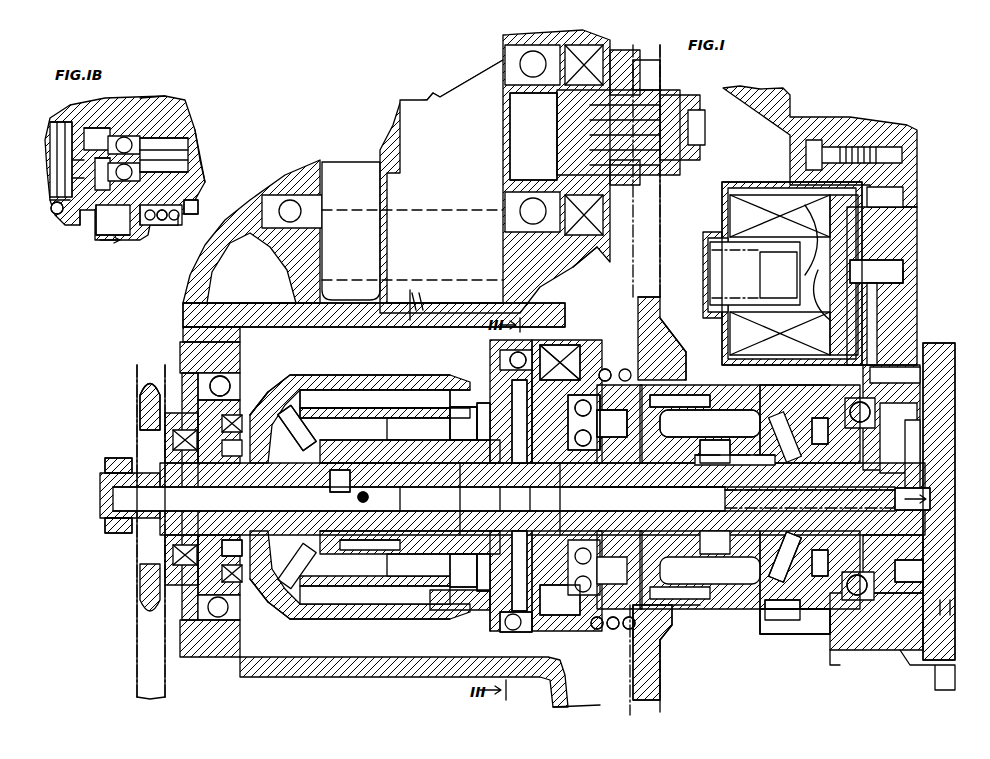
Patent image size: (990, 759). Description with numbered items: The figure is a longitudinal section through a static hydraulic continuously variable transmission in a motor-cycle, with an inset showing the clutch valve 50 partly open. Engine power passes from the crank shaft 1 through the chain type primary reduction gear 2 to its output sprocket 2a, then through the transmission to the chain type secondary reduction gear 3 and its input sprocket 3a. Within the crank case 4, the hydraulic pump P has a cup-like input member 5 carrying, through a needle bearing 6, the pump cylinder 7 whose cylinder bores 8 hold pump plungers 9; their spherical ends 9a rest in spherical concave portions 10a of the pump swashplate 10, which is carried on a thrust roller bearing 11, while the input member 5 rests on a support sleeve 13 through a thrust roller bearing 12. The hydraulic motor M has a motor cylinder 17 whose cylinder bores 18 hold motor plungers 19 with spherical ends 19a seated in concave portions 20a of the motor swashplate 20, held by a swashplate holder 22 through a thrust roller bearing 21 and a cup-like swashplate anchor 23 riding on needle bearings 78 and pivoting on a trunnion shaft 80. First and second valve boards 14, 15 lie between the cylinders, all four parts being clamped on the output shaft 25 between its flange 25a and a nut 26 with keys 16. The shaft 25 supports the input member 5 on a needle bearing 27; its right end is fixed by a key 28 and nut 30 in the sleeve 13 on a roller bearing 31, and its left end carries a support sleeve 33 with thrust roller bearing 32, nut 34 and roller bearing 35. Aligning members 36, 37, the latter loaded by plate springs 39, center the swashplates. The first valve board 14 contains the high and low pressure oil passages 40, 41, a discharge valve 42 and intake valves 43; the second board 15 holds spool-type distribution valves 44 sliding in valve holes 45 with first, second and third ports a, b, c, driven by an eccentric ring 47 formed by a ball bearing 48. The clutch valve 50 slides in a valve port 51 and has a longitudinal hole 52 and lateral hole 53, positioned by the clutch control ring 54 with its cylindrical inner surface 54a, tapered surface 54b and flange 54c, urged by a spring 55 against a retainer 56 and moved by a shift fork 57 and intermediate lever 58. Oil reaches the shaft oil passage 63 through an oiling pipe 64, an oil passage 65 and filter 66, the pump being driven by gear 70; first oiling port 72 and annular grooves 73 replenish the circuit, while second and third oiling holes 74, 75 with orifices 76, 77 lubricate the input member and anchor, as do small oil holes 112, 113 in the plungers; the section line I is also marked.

In FIG. 1, the crank shaft 1 is at (526, 139).
In FIG. 1, the chain type primary reduction gear 2 is at (665, 222).
In FIG. 1, the output sprocket 2a is at (645, 302).
In FIG. 1, the chain type secondary reduction gear 3 is at (137, 632).
In FIG. 1, the input sprocket 3a is at (142, 412).
In FIG. 1, the crank case 4 is at (237, 315).
In FIG. 1, the input member 5 is at (792, 604).
In FIG. 1, the needle bearing 6 is at (680, 378).
In FIG. 1B, the pump cylinder 7 is at (192, 185).
In FIG. 1, the pump cylinder 7 is at (634, 423).
In FIG. 1B, the cylinder bores 8 is at (183, 140).
In FIG. 1, the cylinder bores 8 is at (612, 419).
In FIG. 1B, the pump plungers 9 is at (185, 162).
In FIG. 1, the pump plungers 9 is at (755, 395).
In FIG. 1, the spherical ends 9a is at (780, 398).
In FIG. 1, the pump swashplate 10 is at (760, 550).
In FIG. 1, the spherical concave portions 10a is at (710, 423).
In FIG. 1, the thrust roller bearing 11 is at (818, 420).
In FIG. 1, the thrust roller bearing 12 is at (815, 560).
In FIG. 1, the support sleeve 13 is at (828, 578).
In FIG. 1, the first valve board 14 is at (604, 370).
In FIG. 1, the second valve board 15 is at (500, 395).
In FIG. 1, the keys 16 is at (410, 520).
In FIG. 1, the motor cylinder 17 is at (472, 385).
In FIG. 1, the cylinder bores 18 is at (463, 423).
In FIG. 1, the motor plungers 19 is at (380, 410).
In FIG. 1, the spherical ends 19a is at (345, 440).
In FIG. 1, the motor swashplate 20 is at (280, 395).
In FIG. 1, the spherical concave portions 20a is at (310, 420).
In FIG. 1, the thrust roller bearing 21 is at (320, 598).
In FIG. 1, the swashplate holder 22 is at (315, 560).
In FIG. 1, the swashplate anchor 23 is at (285, 585).
In FIG. 1B, the output shaft 25 is at (146, 115).
In FIG. 1, the output shaft 25 is at (115, 487).
In FIG. 1, the flange 25a is at (370, 524).
In FIG. 1, the nut 26 is at (703, 451).
In FIG. 1, the needle bearing 27 is at (868, 450).
In FIG. 1, the key 28 is at (909, 571).
In FIG. 1, the nut 30 is at (930, 525).
In FIG. 1, the roller bearing 31 is at (857, 595).
In FIG. 1, the thrust roller bearing 32 is at (244, 550).
In FIG. 1, the support sleeve 33 is at (419, 493).
In FIG. 1, the nut 34 is at (115, 530).
In FIG. 1, the roller bearing 35 is at (232, 385).
In FIG. 1, the aligning member 36 is at (764, 466).
In FIG. 1, the aligning member 37 is at (419, 498).
In FIG. 1, the plate springs 39 is at (335, 481).
In FIG. 1B, the high pressure oil passage 40 is at (104, 155).
In FIG. 1, the high pressure oil passage 40 is at (560, 640).
In FIG. 1B, the low pressure oil passage 41 is at (92, 125).
In FIG. 1, the low pressure oil passage 41 is at (553, 545).
In FIG. 1, the discharge valve 42 is at (612, 423).
In FIG. 1, the intake valves 43 is at (595, 441).
In FIG. 1B, the distribution valves 44 is at (62, 130).
In FIG. 1, the distribution valves 44 is at (510, 365).
In FIG. 1, the valve holes 45 is at (500, 466).
In FIG. 1B, the eccentric ring 47 is at (52, 200).
In FIG. 1, the eccentric ring 47 is at (480, 610).
In FIG. 1B, the ball bearing 48 is at (54, 212).
In FIG. 1, the ball bearing 48 is at (495, 632).
In FIG. 1B, the clutch valve 50 is at (82, 222).
In FIG. 1, the clutch valve 50 is at (560, 370).
In FIG. 1, the valve port 51 is at (550, 365).
In FIG. 1B, the longitudinal hole 52 is at (72, 162).
In FIG. 1, the longitudinal hole 52 is at (569, 444).
In FIG. 1B, the lateral hole 53 is at (75, 180).
In FIG. 1, the lateral hole 53 is at (578, 459).
In FIG. 1B, the clutch control ring 54 is at (118, 232).
In FIG. 1, the clutch control ring 54 is at (610, 630).
In FIG. 1B, the cylindrical inner peripheral surface 54a is at (145, 226).
In FIG. 1, the cylindrical inner peripheral surface 54a is at (597, 630).
In FIG. 1B, the tapered surface 54b is at (100, 230).
In FIG. 1, the tapered surface 54b is at (525, 635).
In FIG. 1B, the flange 54c is at (162, 222).
In FIG. 1, the flange 54c is at (600, 632).
In FIG. 1B, the spring 55 is at (180, 222).
In FIG. 1, the spring 55 is at (628, 628).
In FIG. 1B, the retainer 56 is at (196, 212).
In FIG. 1, the retainer 56 is at (665, 640).
In FIG. 1, the shift fork 57 is at (583, 395).
In FIG. 1, the intermediate lever 58 is at (740, 466).
In FIG. 1, the oil passage 63 is at (662, 495).
In FIG. 1, the oiling pipe 64 is at (935, 498).
In FIG. 1, the oil passage 65 is at (880, 323).
In FIG. 1, the filter 66 is at (772, 200).
In FIG. 1, the gear 70 is at (790, 618).
In FIG. 1, the first oiling port 72 is at (528, 499).
In FIG. 1, the annular grooves 73 is at (500, 499).
In FIG. 1, the second oiling hole 74 is at (730, 494).
In FIG. 1, the third oiling hole 75 is at (370, 497).
In FIG. 1, the orifice 76 is at (707, 466).
In FIG. 1, the orifice 77 is at (360, 472).
In FIG. 1, the needle bearings 78 is at (455, 610).
In FIG. 1, the trunnion shaft 80 is at (403, 497).
In FIG. 1, the small diameter oil hole 112 is at (705, 405).
In FIG. 1, the small diameter oil hole 113 is at (393, 392).
In FIG. 1, the first port a is at (519, 421).
In FIG. 1, the second port b is at (537, 434).
In FIG. 1, the third port c is at (495, 423).
In FIG. 1, the section I is at (578, 293).
In FIG. 1, the hydraulic pump P is at (680, 340).
In FIG. 1, the hydraulic motor M is at (372, 362).